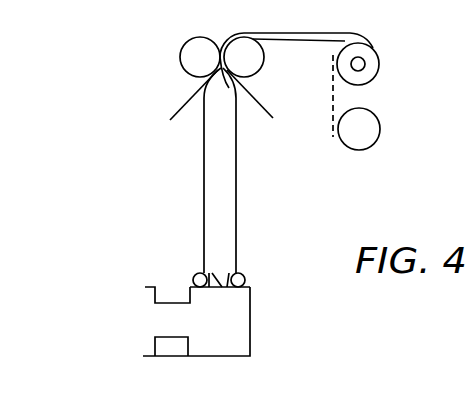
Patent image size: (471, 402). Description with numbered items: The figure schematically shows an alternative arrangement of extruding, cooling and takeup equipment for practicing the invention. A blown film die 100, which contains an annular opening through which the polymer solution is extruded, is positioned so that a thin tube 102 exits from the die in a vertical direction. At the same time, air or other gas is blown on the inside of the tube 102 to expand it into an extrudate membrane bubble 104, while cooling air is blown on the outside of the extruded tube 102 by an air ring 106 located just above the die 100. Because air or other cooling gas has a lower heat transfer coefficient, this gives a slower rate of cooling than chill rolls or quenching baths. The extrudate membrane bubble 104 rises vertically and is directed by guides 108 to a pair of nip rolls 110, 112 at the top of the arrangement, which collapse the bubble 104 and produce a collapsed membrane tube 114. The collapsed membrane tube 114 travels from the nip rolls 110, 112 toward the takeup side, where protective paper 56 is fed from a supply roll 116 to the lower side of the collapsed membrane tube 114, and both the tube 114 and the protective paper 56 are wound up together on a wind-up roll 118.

The blown film die 100 is at (238, 356).
The thin tube 102 is at (225, 289).
The extrudate membrane bubble 104 is at (236, 213).
The air ring 106 is at (192, 279).
The guides 108 is at (188, 98).
The nip roll 110 is at (181, 60).
The nip roll 112 is at (253, 65).
The collapsed membrane tube 114 is at (272, 33).
The supply roll 116 is at (380, 128).
The wind-up roll 118 is at (380, 58).
The protective paper 56 is at (333, 97).